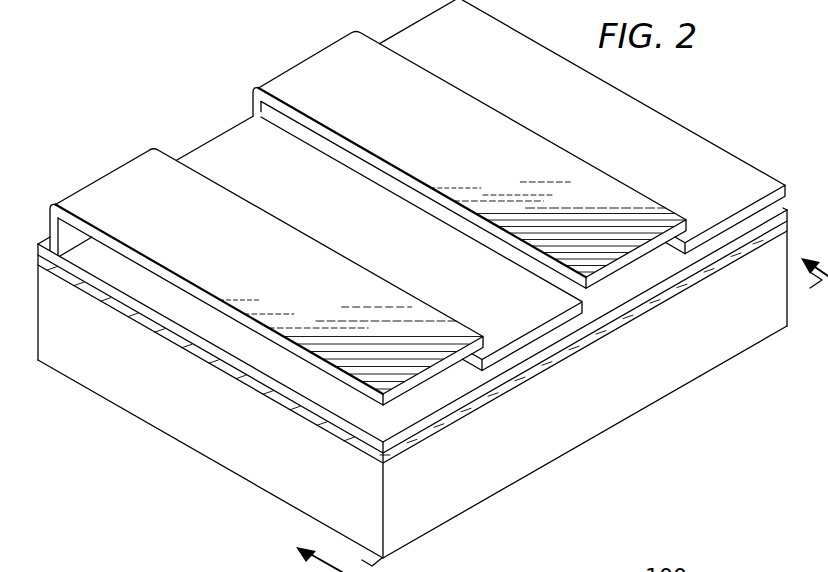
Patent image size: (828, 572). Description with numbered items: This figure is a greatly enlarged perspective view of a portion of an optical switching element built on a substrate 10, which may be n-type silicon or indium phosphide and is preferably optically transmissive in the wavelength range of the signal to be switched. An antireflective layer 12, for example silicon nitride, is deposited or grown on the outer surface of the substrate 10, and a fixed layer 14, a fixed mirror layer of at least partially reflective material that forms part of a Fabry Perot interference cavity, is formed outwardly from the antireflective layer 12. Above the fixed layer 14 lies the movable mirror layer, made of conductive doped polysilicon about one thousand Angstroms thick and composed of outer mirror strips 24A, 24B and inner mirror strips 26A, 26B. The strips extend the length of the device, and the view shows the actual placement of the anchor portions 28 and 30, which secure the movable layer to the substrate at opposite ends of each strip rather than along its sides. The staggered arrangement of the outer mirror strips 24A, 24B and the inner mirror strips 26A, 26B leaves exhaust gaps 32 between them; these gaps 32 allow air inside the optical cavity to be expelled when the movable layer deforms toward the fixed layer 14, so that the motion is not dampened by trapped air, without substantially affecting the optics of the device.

The substrate 10 is at (514, 460).
The antireflective layer 12 is at (569, 355).
The fixed layer 14 is at (609, 318).
The outer mirror strip 24A is at (297, 279).
The outer mirror strip 24B is at (497, 166).
The inner mirror strip 26A is at (406, 245).
The inner mirror strip 26B is at (608, 127).
The anchor portion 28 is at (50, 229).
The anchor portion 30 is at (221, 137).
The exhaust gap 32 is at (356, 161).